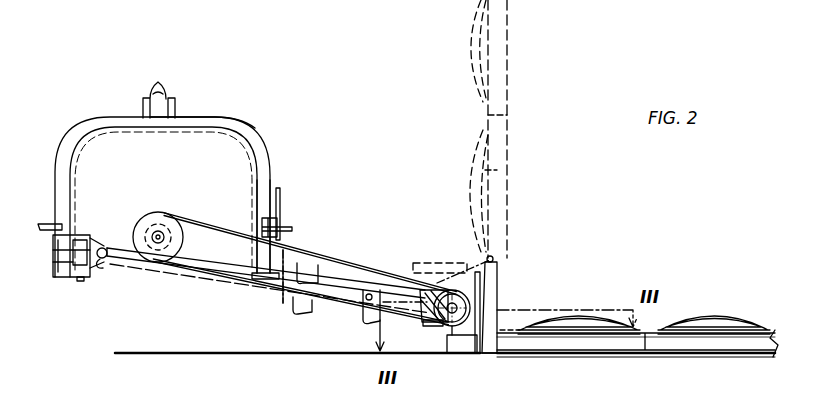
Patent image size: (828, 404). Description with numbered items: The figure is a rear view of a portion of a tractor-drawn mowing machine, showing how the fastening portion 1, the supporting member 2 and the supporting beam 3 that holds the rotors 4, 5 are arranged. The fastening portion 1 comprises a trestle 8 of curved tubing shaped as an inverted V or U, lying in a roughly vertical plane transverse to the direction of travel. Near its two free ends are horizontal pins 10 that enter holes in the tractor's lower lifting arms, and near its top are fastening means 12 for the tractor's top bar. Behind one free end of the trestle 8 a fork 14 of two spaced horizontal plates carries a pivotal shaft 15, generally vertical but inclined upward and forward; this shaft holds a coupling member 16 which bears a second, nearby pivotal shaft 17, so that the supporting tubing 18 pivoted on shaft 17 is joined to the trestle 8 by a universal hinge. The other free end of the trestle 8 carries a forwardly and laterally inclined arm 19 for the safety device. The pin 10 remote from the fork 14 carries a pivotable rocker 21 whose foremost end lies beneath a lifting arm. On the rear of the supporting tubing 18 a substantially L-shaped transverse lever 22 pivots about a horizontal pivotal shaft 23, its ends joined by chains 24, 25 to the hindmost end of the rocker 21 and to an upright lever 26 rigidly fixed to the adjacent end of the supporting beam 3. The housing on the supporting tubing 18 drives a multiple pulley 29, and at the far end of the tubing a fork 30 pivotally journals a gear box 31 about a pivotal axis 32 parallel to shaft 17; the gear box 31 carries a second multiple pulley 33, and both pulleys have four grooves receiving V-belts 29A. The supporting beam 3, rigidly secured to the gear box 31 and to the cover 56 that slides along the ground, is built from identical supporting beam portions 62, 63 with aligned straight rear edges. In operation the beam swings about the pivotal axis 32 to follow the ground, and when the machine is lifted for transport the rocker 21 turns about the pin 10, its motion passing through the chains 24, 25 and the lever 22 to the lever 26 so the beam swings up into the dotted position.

The fastening portion 1 is at (92, 114).
The supporting member 2 is at (222, 264).
The supporting beam 3 is at (509, 88).
The rotor 4 is at (573, 322).
The rotor 5 is at (718, 322).
The trestle 8 is at (212, 117).
The horizontal pin 10 is at (50, 224).
The fastening means 12 is at (158, 85).
The fork 14 is at (90, 233).
The pivotal shaft 15 is at (78, 282).
The coupling member 16 is at (102, 248).
The pivotal shaft 17 is at (103, 264).
The supporting tubing 18 is at (168, 270).
The arm 19 is at (307, 276).
The rocker 21 is at (279, 190).
The transverse lever 22 is at (297, 312).
The pivotal shaft 23 is at (368, 288).
The chain 24 is at (283, 214).
The chain 25 is at (476, 268).
The upright lever 26 is at (492, 260).
The multiple pulley 29 is at (162, 212).
The V-belt 29A is at (227, 231).
The fork 30 is at (428, 321).
The gear box 31 is at (470, 335).
The pivotal axis 32 is at (452, 328).
The multiple pulley 33 is at (450, 292).
The cover 56 is at (498, 300).
The supporting beam portion 62 is at (577, 350).
The supporting beam portion 63 is at (740, 353).